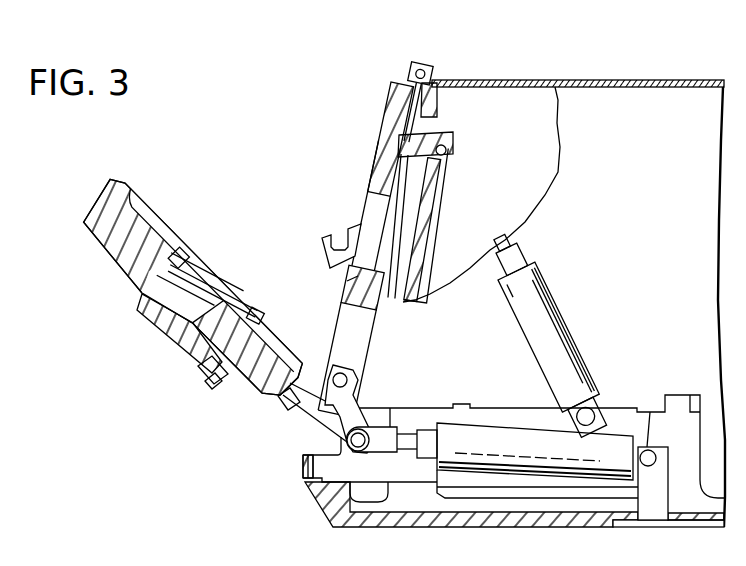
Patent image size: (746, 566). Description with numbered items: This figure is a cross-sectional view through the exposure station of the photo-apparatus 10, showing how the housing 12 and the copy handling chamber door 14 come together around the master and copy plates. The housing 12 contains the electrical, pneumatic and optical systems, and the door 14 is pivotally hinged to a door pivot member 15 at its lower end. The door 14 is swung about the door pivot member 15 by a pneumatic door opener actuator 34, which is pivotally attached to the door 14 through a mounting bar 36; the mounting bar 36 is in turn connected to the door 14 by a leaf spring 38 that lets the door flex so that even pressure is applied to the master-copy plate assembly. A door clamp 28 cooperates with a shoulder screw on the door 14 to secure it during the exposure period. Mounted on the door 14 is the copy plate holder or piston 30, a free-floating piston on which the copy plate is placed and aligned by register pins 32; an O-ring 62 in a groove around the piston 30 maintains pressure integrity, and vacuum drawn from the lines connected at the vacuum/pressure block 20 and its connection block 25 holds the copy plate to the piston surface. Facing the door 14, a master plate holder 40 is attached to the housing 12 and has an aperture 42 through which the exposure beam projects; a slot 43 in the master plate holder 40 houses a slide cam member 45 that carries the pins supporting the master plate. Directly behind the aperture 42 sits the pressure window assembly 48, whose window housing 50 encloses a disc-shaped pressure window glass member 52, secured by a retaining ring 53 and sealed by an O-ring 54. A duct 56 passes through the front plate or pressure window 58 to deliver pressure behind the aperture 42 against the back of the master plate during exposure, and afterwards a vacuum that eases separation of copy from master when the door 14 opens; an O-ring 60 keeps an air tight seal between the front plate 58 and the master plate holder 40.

The photo-apparatus 10 is at (634, 76).
The housing 12 is at (520, 80).
The copy handling chamber door 14 is at (82, 210).
The door pivot member 15 is at (352, 377).
The vacuum/pressure block 20 is at (140, 306).
The connection block 25 is at (205, 375).
The door clamp 28 is at (322, 238).
The copy plate holder or piston 30 is at (232, 283).
The register pin 32 is at (265, 312).
The pneumatic door opener actuator 34 is at (476, 437).
The mounting bar 36 is at (333, 448).
The leaf spring 38 is at (280, 386).
The master plate holder 40 is at (380, 153).
The aperture 42 is at (372, 207).
The slot 43 is at (354, 278).
The slide cam member 45 is at (355, 306).
The pressure window assembly 48 is at (452, 189).
The window housing 50 is at (393, 174).
The pressure window glass member 52 is at (425, 243).
The retaining ring 53 is at (440, 208).
The O-ring 54 is at (447, 146).
The duct 56 is at (435, 110).
The front plate or pressure window 58 is at (392, 96).
The O-ring 60 is at (407, 140).
The O-ring 62 is at (178, 262).